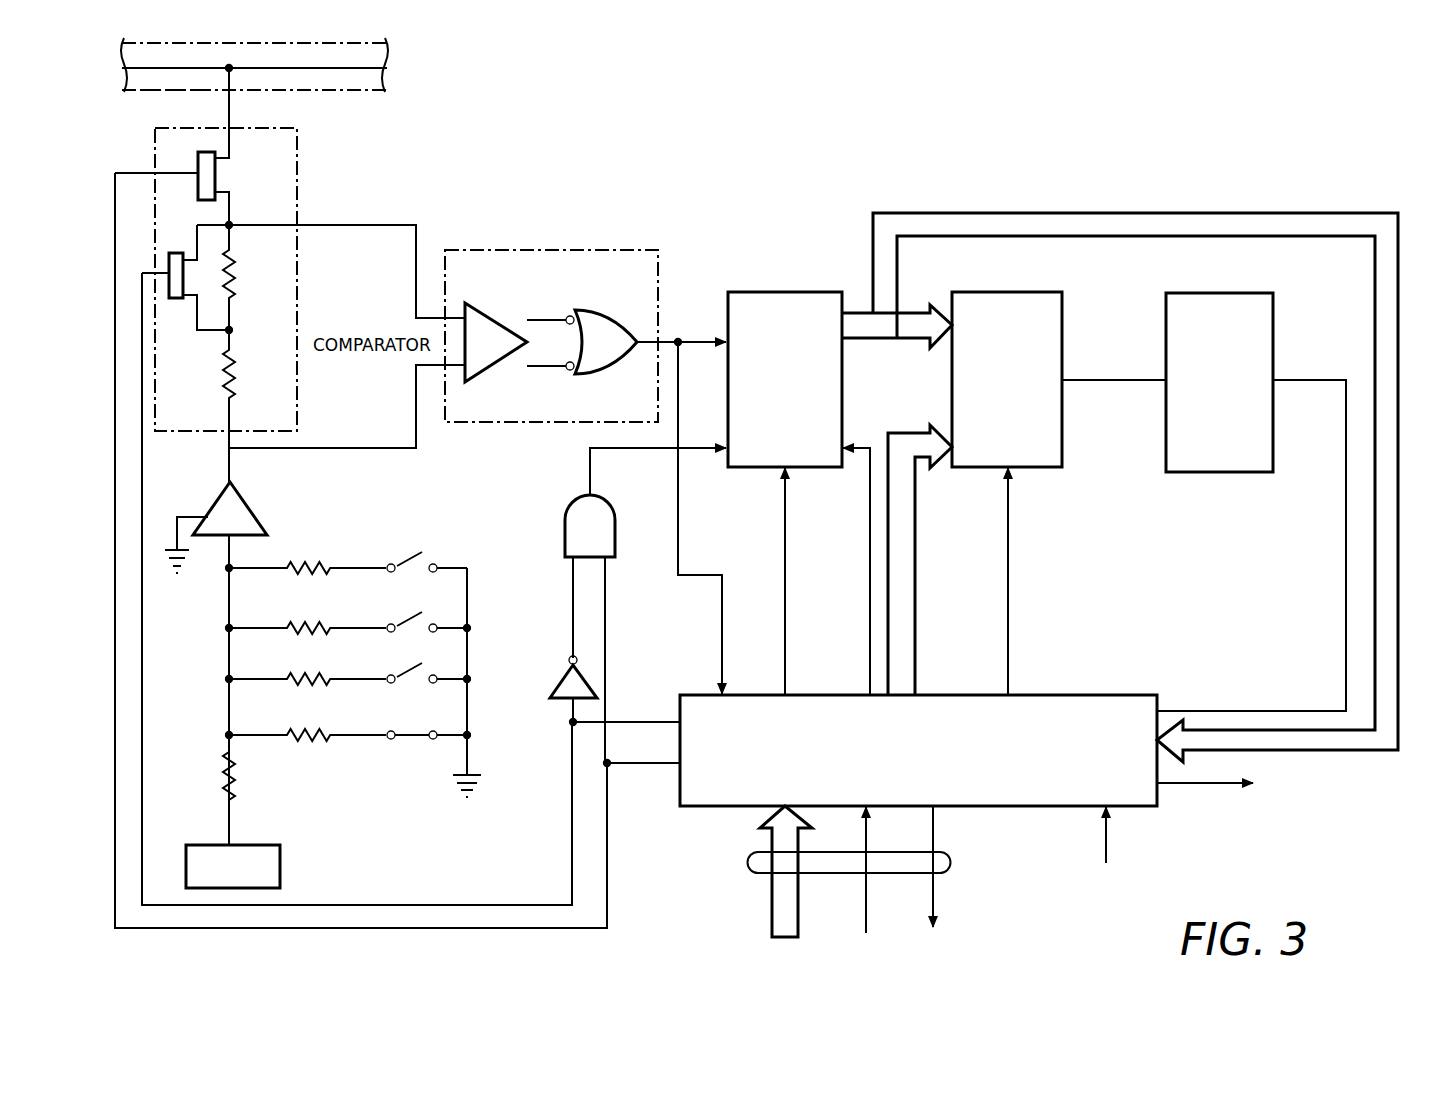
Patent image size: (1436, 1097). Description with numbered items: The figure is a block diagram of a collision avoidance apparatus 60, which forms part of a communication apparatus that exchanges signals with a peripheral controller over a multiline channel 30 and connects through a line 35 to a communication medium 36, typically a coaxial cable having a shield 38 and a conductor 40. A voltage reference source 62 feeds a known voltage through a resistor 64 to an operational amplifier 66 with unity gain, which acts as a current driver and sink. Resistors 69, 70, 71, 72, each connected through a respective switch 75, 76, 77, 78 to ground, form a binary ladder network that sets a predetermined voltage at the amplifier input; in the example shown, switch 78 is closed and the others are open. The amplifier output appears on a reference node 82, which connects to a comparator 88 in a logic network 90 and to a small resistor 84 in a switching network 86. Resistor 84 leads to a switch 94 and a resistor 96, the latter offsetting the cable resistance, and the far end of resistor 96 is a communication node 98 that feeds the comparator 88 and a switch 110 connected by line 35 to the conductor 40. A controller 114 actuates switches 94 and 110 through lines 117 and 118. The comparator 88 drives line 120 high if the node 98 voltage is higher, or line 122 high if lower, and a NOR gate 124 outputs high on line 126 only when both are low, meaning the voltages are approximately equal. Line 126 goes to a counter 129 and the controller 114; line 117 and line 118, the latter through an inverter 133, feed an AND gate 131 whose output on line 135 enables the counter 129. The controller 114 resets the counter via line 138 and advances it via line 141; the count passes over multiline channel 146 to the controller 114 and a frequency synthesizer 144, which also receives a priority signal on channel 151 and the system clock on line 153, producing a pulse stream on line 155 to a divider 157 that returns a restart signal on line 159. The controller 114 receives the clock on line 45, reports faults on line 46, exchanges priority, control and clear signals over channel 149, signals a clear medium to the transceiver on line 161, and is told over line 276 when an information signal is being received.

The multiline channel 30 is at (950, 858).
The line 35 is at (232, 115).
The communication medium 36 is at (303, 43).
The shield 38 is at (178, 90).
The conductor 40 is at (195, 65).
The line 45 is at (866, 905).
The line 46 is at (940, 905).
The collision avoidance apparatus 60 is at (1248, 165).
The voltage reference source 62 is at (282, 857).
The resistor 64 is at (222, 776).
The operational amplifier 66 is at (208, 512).
The resistor 69 is at (300, 563).
The resistor 70 is at (300, 623).
The resistor 71 is at (298, 674).
The resistor 72 is at (298, 730).
The switch 75 is at (418, 559).
The switch 76 is at (418, 619).
The switch 77 is at (418, 670).
The switch 78 is at (408, 727).
The reference node 82 is at (228, 443).
The resistor 84 is at (235, 378).
The switching network 86 is at (287, 152).
The comparator 88 is at (482, 310).
The logic network 90 is at (473, 257).
The switch 94 is at (176, 309).
The resistor 96 is at (235, 287).
The communication node 98 is at (229, 225).
The switch 110 is at (223, 175).
The controller 114 is at (1110, 677).
The line 117 is at (142, 619).
The line 118 is at (115, 673).
The line 120 is at (528, 320).
The line 122 is at (528, 376).
The NOR gate 124 is at (606, 310).
The line 126 is at (677, 334).
The counter 129 is at (750, 290).
The AND gate 131 is at (565, 523).
The inverter 133 is at (558, 673).
The line 135 is at (588, 448).
The line 138 is at (768, 512).
The line 141 is at (855, 504).
The frequency synthesizer 144 is at (1005, 290).
The multiline channel 146 is at (853, 310).
The channel 149 is at (770, 902).
The multiline channel 151 is at (920, 525).
The line 153 is at (1014, 526).
The line 155 is at (1108, 378).
The divider 157 is at (1266, 272).
The line 159 is at (1307, 378).
The line 161 is at (1203, 783).
The line 276 is at (1108, 839).